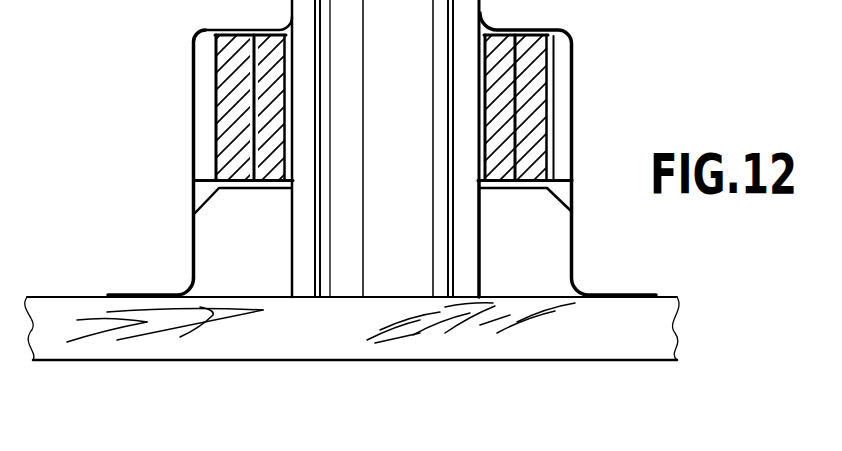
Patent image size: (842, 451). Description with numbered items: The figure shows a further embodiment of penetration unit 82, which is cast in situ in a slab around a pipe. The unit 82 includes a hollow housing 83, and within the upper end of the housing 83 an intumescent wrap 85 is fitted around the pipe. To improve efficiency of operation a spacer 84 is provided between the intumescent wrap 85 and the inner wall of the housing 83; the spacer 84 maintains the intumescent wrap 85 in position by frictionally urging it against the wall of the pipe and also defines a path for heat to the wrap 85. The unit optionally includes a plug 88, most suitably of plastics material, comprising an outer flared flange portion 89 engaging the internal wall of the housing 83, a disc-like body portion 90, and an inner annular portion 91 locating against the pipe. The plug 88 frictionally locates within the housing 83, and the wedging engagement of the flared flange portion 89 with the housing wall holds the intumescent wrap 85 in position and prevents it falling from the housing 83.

The penetration unit 82 is at (176, 204).
The hollow housing 83 is at (190, 254).
The spacer 84 is at (188, 44).
The intumescent wrap 85 is at (272, 173).
The plug 88 is at (551, 203).
The outer flared flange portion 89 is at (566, 194).
The disc-like body portion 90 is at (516, 190).
The inner annular portion 91 is at (479, 180).